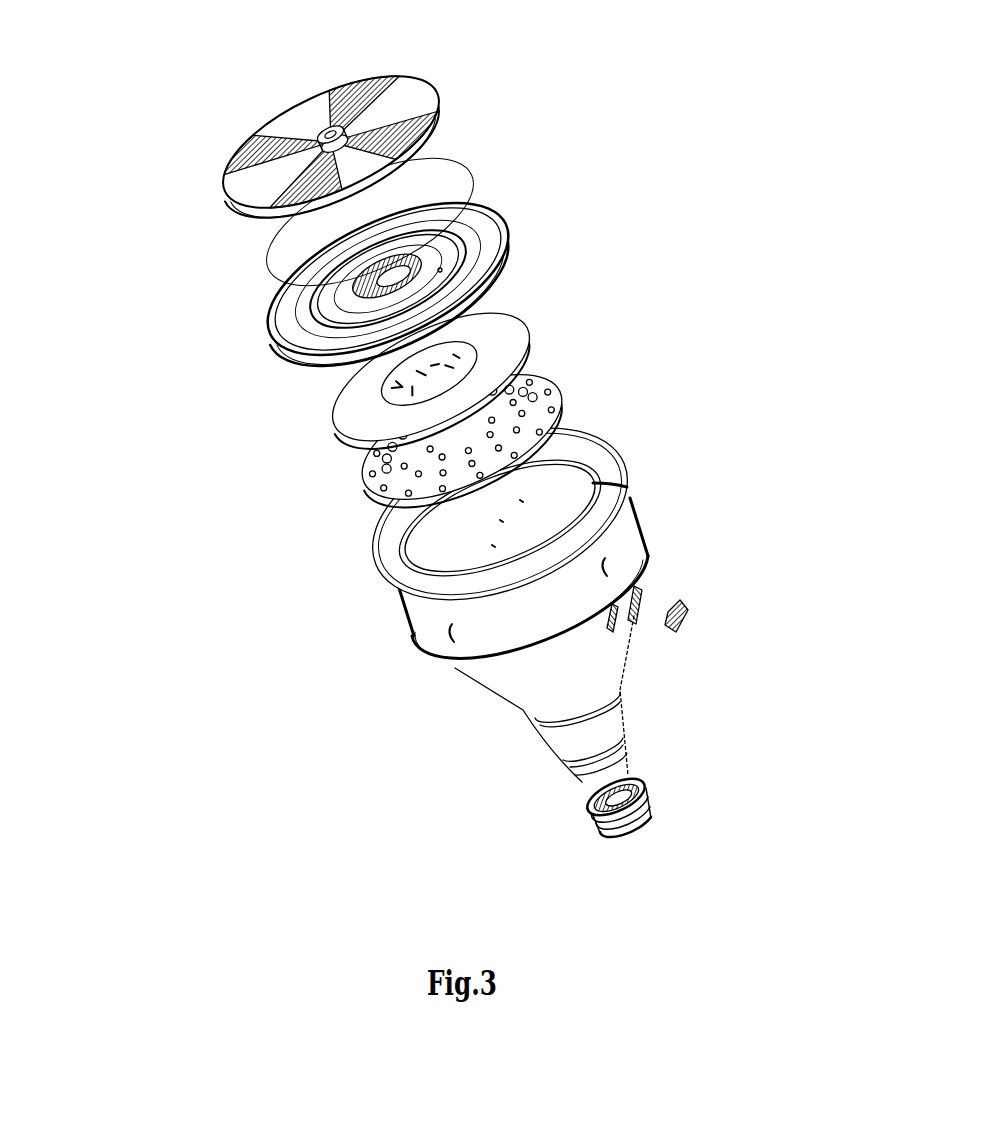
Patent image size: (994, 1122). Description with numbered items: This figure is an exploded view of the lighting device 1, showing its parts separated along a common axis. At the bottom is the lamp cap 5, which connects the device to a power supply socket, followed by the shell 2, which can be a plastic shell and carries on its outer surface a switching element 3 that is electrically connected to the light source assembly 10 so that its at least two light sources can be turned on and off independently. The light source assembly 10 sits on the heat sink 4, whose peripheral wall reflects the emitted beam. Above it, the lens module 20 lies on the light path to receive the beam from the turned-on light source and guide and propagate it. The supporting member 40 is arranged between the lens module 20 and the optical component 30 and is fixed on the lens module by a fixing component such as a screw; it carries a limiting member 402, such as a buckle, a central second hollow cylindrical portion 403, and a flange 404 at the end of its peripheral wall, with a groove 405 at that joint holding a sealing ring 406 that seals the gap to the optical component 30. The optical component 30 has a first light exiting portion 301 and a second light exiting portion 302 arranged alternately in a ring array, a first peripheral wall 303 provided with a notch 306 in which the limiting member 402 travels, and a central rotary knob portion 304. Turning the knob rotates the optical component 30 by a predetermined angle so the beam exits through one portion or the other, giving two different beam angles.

The lighting device 1 is at (682, 26).
The shell 2 is at (450, 662).
The switching element 3 is at (687, 607).
The heat sink 4 is at (593, 483).
The lamp cap 5 is at (650, 807).
The light source assembly 10 is at (523, 407).
The lens module 20 is at (498, 352).
The optical component 30 is at (305, 175).
The supporting member 40 is at (390, 285).
The first light exiting portion 301 is at (248, 148).
The second light exiting portion 302 is at (253, 182).
The first peripheral wall 303 is at (380, 184).
The rotary knob portion 304 is at (332, 137).
The notch 306 is at (277, 215).
The limiting member 402 is at (322, 262).
The second hollow cylindrical portion 403 is at (367, 303).
The flange 404 is at (492, 210).
The groove 405 is at (485, 248).
The sealing ring 406 is at (267, 267).